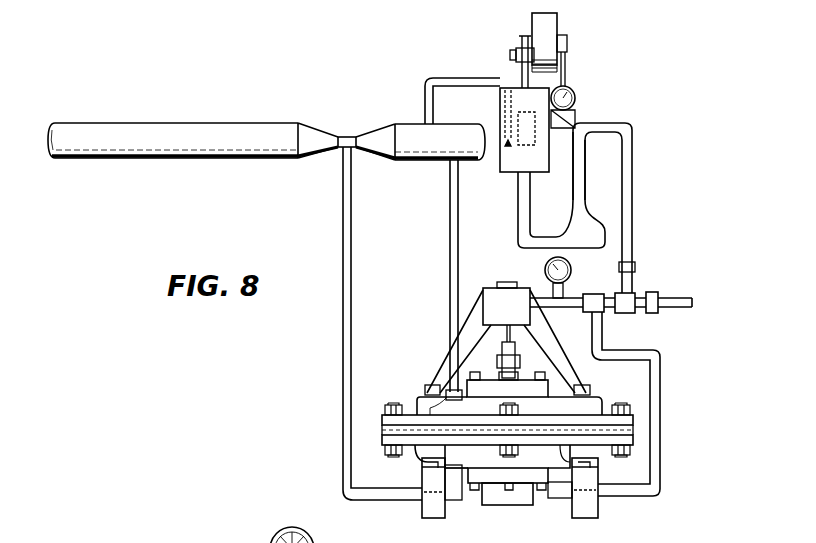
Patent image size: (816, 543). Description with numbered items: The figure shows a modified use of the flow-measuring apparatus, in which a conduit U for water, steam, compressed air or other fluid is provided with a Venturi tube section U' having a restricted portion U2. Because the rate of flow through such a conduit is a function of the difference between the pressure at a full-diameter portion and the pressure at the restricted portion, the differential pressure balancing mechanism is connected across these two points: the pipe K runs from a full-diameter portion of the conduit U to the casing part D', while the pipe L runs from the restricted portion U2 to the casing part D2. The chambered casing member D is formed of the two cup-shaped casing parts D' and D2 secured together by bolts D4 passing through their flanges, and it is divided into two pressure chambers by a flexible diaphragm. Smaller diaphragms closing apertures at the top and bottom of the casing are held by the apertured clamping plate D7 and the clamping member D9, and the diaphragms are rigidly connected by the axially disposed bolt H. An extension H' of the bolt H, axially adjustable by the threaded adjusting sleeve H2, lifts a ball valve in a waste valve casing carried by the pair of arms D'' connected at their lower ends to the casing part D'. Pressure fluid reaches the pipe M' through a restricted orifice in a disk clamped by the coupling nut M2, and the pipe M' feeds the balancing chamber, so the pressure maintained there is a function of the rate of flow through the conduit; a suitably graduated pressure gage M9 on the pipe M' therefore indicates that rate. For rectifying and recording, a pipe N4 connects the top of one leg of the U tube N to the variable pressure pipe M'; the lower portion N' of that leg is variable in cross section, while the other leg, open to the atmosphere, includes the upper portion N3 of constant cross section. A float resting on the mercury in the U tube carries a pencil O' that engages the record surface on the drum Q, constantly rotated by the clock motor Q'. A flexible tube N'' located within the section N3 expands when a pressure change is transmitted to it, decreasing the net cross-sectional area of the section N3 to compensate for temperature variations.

The conduit U is at (266, 126).
The Venturi tube section U' is at (345, 125).
The restricted portion of the Venturi tube section U2 is at (345, 137).
The pipe section L is at (343, 208).
The vertical pipe section K is at (450, 214).
The flexible tube N'' is at (465, 87).
The upper portion of the open U tube leg N3 is at (500, 172).
The pencil O' is at (515, 50).
The drum Q is at (549, 42).
The clock motor Q' is at (578, 90).
The U tube N is at (561, 190).
The lower portion of U tube leg N' is at (591, 174).
The pipe N4 is at (633, 185).
The apertured clamping plate D7 is at (493, 290).
The arms D'' is at (514, 342).
The variable pressure pipe M' is at (582, 312).
The pressure gage M9 is at (572, 270).
The coupling nut M2 is at (654, 293).
The stem extension H' is at (495, 337).
The threaded adjusting sleeve H2 is at (500, 362).
The bolt H is at (507, 372).
The cup shaped casing part D' is at (521, 396).
The bolts D4 is at (396, 405).
The chambered casing member D is at (502, 433).
The cup shaped casing part D2 is at (584, 458).
The clamping member D9 is at (505, 505).